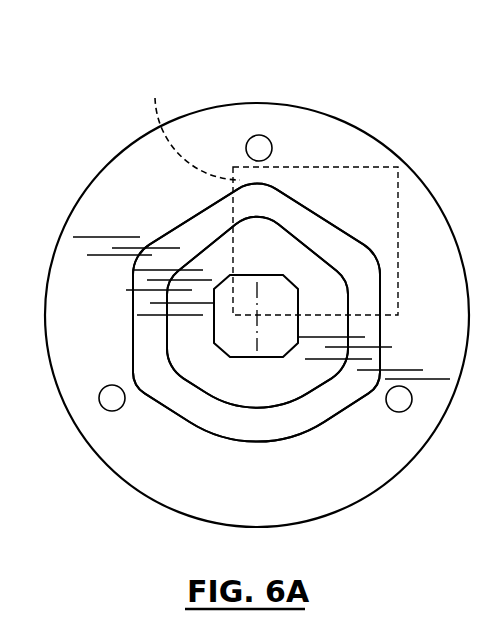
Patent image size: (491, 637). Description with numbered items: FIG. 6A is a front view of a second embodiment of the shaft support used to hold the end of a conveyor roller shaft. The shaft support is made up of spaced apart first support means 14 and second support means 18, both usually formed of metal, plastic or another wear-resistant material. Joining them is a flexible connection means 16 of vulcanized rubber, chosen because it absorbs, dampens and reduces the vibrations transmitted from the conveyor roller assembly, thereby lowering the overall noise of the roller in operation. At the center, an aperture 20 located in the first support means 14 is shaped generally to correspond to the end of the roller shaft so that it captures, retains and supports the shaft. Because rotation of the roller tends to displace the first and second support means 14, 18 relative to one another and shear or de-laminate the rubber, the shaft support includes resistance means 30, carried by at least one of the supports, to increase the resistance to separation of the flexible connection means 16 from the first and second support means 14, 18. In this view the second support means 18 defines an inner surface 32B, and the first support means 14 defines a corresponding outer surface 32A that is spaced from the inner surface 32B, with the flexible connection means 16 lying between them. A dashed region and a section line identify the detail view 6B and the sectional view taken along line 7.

The first support means 14 is at (197, 287).
The flexible connection means 16 is at (151, 368).
The second support means 18 is at (99, 430).
The aperture 20 is at (245, 333).
The resistance means 30 is at (168, 255).
The outer surface 32A is at (242, 221).
The inner surface 32B is at (257, 182).
The section view indicator 6B is at (190, 125).
The section line 7- 7 is at (262, 95).